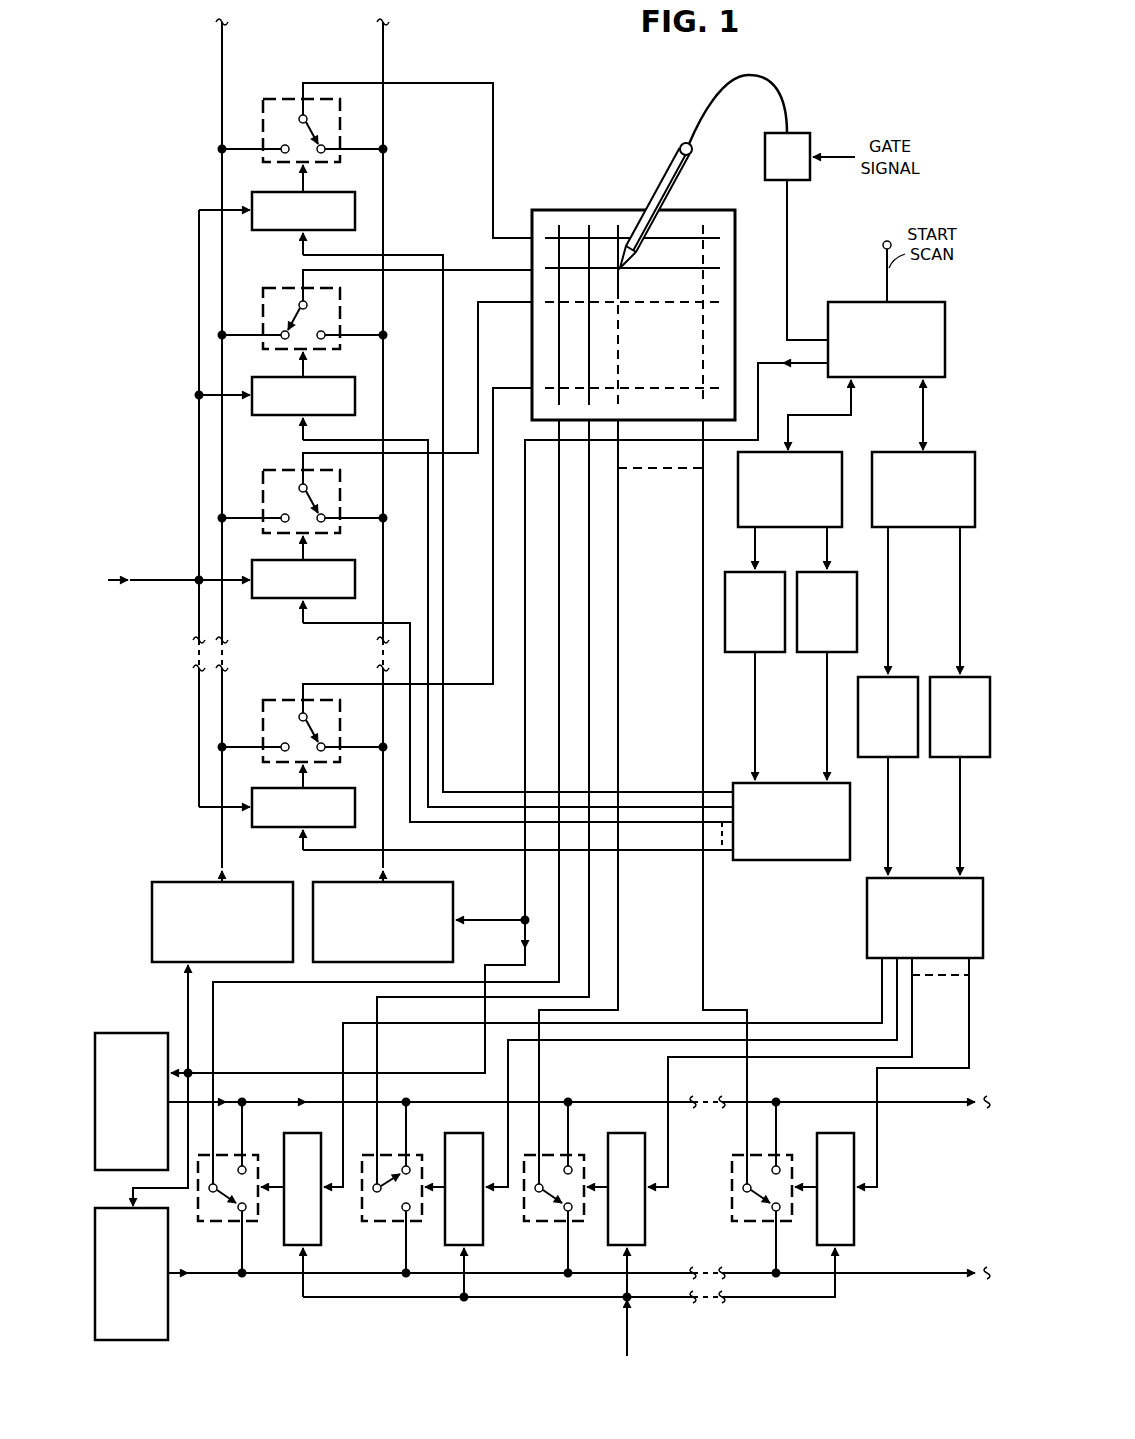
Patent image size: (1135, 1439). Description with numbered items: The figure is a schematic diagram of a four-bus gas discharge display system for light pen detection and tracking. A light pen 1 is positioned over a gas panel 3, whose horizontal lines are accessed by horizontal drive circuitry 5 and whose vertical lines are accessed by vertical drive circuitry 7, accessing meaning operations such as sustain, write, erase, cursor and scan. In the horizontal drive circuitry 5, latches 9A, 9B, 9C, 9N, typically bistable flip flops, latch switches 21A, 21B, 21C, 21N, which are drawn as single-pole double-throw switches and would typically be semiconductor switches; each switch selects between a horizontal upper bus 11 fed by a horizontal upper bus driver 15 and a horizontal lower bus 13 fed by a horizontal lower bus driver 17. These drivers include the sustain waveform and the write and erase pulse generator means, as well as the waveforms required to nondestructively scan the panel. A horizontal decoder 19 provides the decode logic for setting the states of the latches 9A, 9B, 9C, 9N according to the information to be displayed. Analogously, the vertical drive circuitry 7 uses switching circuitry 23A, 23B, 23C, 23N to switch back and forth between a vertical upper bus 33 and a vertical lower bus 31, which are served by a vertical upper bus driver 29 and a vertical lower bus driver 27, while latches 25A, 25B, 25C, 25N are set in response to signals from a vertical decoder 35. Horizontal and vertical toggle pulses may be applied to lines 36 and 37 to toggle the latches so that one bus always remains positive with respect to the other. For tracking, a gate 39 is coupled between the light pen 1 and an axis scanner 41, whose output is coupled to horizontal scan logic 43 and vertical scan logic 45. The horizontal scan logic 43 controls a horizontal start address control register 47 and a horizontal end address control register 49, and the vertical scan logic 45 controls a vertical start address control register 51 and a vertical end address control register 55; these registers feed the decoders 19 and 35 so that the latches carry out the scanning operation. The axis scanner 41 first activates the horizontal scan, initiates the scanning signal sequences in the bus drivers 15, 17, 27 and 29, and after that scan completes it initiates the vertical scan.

The light pen 1 is at (665, 182).
The gas panel 3 is at (547, 208).
The horizontal drive circuitry 5 is at (183, 368).
The vertical drive circuitry 7 is at (360, 1306).
The latch 9A is at (355, 203).
The latch 9B is at (355, 388).
The latch 9C is at (355, 571).
The latch 9N is at (355, 800).
The horizontal upper bus 11 is at (222, 52).
The horizontal lower bus 13 is at (383, 60).
The horizontal upper bus driver 15 is at (152, 922).
The horizontal lower bus driver 17 is at (453, 899).
The horizontal decoder 19 is at (771, 862).
The switch 21A is at (265, 100).
The switch 21B is at (265, 289).
The switch 21C is at (265, 471).
The switch 21N is at (265, 701).
The switching circuitry 23A is at (252, 1155).
The switching circuitry 23B is at (416, 1155).
The switching circuitry 23C is at (576, 1155).
The switching circuitry 23N is at (782, 1155).
The latch 25A is at (321, 1233).
The latch 25B is at (483, 1233).
The latch 25C is at (645, 1233).
The latch 25N is at (854, 1233).
The vertical lower bus driver 27 is at (170, 1312).
The vertical upper bus driver 29 is at (133, 1033).
The vertical lower bus 31 is at (915, 1275).
The vertical upper bus 33 is at (948, 1098).
The vertical decoder 35 is at (867, 898).
The horizontal toggle pulse line 36 is at (160, 605).
The vertical toggle pulse line 37 is at (585, 1318).
The gate 39 is at (800, 133).
The axis scanner 41 is at (946, 320).
The horizontal scan logic 43 is at (830, 452).
The vertical scan logic 45 is at (958, 452).
The horizontal start address control register 47 is at (740, 572).
The horizontal end address control register 49 is at (845, 572).
The vertical start address control register 51 is at (905, 677).
The vertical end address control register 55 is at (975, 677).